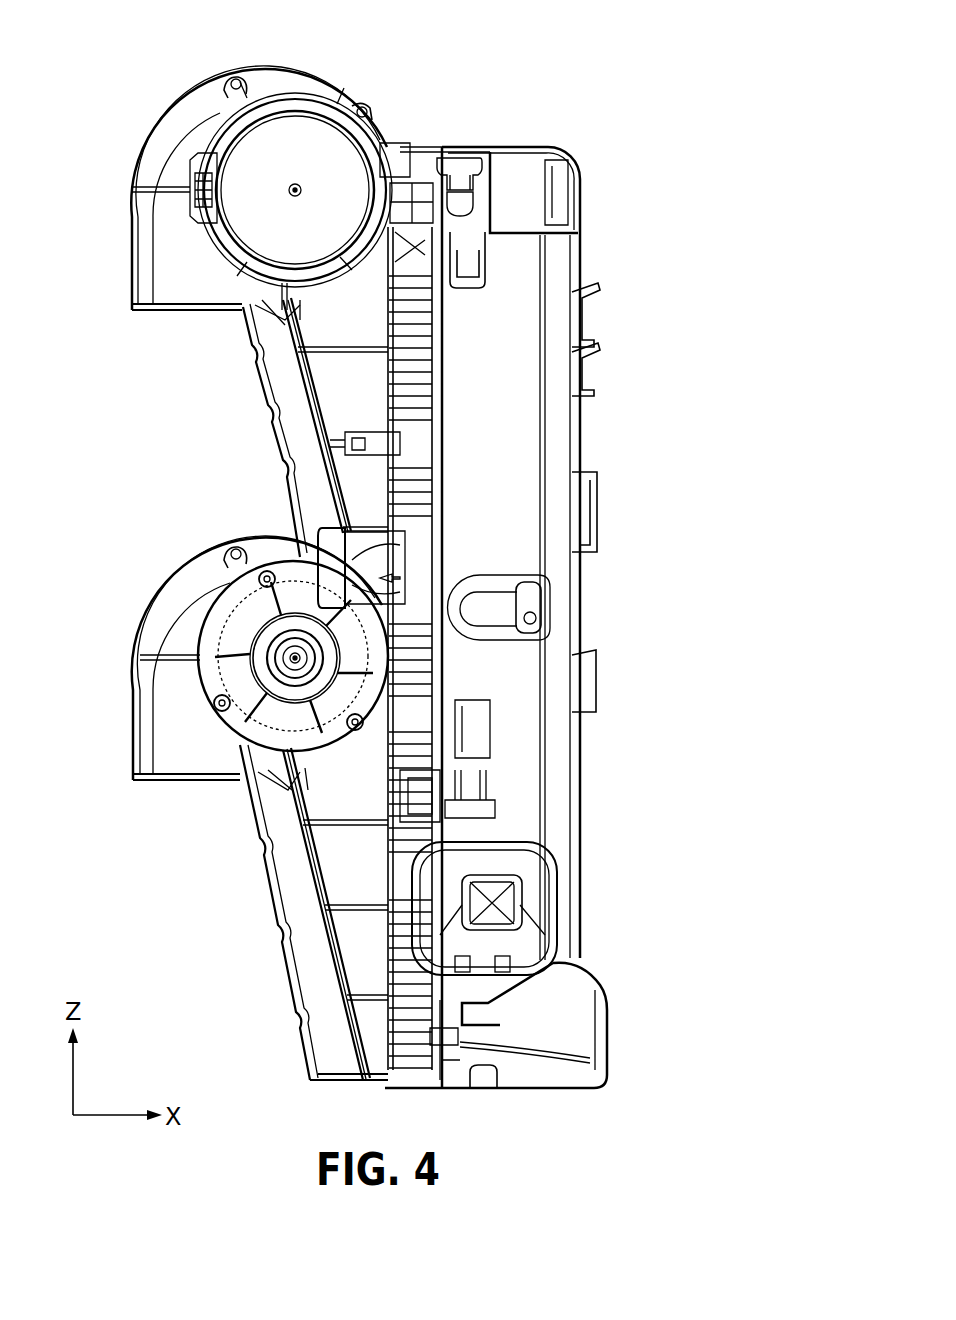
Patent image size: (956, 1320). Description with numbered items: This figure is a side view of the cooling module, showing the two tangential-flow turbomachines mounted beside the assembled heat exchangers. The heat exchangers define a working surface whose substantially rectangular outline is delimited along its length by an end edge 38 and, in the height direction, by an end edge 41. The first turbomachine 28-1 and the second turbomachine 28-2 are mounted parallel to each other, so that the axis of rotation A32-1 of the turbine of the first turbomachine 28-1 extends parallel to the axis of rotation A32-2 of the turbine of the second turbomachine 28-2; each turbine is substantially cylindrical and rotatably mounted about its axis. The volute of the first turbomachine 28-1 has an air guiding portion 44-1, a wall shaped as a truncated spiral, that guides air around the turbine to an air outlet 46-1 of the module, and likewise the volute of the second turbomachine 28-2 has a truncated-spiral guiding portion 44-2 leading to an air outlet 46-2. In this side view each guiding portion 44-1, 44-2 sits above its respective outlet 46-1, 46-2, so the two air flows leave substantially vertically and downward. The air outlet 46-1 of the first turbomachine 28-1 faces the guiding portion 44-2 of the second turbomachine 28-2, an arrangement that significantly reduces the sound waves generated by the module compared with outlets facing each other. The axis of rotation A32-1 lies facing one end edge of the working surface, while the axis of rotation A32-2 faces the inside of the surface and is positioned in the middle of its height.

The end edge 41 is at (503, 452).
The end edge 38 is at (478, 146).
The air guiding portion 44-1 is at (297, 110).
The air guiding portion 44-2 is at (237, 615).
The air outlet 46-1 is at (192, 315).
The air outlet 46-2 is at (205, 795).
The first turbomachine 28-1 is at (292, 299).
The second turbomachine 28-2 is at (332, 771).
The axis of rotation A32-1 is at (295, 190).
The axis of rotation A32-2 is at (295, 658).